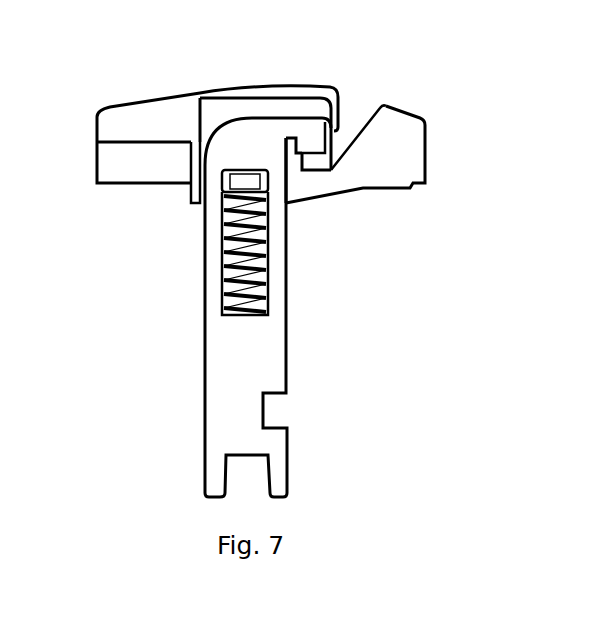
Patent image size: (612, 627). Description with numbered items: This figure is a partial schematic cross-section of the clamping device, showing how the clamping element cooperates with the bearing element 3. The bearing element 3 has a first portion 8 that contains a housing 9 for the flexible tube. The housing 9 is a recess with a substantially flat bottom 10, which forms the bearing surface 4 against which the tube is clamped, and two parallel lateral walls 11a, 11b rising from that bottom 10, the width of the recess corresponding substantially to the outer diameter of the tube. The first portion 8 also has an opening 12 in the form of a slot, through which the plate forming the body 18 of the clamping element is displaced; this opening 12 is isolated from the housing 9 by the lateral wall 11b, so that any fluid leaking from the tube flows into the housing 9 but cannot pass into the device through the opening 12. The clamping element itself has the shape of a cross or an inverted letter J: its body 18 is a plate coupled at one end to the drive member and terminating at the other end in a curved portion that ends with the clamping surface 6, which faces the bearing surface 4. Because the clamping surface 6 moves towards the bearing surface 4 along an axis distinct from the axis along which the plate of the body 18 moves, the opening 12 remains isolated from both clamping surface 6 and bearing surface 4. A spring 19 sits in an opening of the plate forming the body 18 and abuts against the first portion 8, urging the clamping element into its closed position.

The bearing element 3 is at (160, 120).
The bearing surface 4 is at (306, 172).
The clamping surface 6 is at (313, 122).
The first portion 8 is at (386, 140).
The housing 9 is at (325, 172).
The bottom 10 is at (312, 172).
The lateral wall 11a is at (333, 167).
The lateral wall 11b is at (296, 175).
The opening 12 is at (188, 150).
The body 18 is at (220, 340).
The spring 19 is at (226, 268).